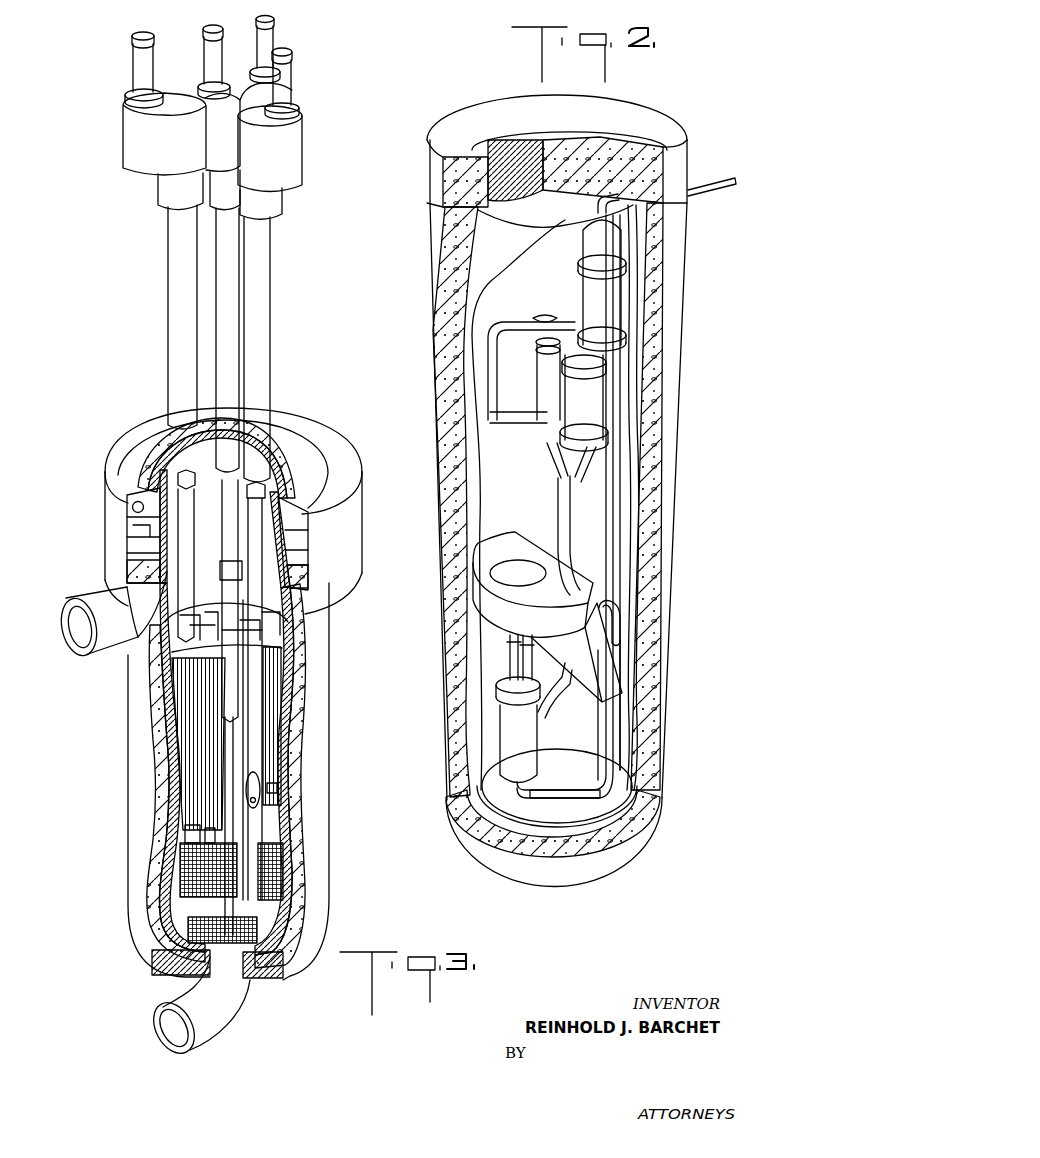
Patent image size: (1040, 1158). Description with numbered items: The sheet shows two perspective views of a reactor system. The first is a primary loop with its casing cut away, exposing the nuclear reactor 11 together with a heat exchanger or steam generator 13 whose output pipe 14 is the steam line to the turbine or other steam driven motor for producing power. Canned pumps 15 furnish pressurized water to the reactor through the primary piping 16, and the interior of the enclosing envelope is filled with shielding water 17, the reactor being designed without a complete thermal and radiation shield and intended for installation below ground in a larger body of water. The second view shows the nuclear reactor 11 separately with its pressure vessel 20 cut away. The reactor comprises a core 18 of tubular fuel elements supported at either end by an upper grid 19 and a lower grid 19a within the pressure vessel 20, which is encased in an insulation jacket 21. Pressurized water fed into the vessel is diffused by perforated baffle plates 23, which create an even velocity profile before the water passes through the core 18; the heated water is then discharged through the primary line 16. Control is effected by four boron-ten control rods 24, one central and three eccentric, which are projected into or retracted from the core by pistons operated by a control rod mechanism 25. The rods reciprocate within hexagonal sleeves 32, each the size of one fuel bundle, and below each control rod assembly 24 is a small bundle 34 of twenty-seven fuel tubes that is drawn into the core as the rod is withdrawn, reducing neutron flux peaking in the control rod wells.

In FIG. 2, the nuclear reactor 11 is at (520, 742).
In FIG. 3, the nuclear reactor 11 is at (110, 823).
In FIG. 2, the heat exchanger or steam generator 13 is at (602, 459).
In FIG. 2, the output pipe 14 is at (703, 193).
In FIG. 2, the canned pumps 15 is at (587, 395).
In FIG. 2, the primary piping 16 is at (563, 483).
In FIG. 3, the primary piping 16 is at (90, 595).
In FIG. 2, the shielding water 17 is at (595, 734).
In FIG. 3, the core 18 is at (272, 688).
In FIG. 2, the upper grid 19 is at (493, 232).
In FIG. 3, the upper grid 19 is at (148, 664).
In FIG. 3, the lower grid 19a is at (190, 823).
In FIG. 3, the pressure vessel 20 is at (302, 732).
In FIG. 3, the insulation jacket 21 is at (300, 757).
In FIG. 3, the baffle plates 23 is at (220, 1013).
In FIG. 3, the control rods 24 is at (292, 478).
In FIG. 3, the control rod mechanism 25 is at (290, 146).
In FIG. 3, the hexagonal sleeves 32 is at (258, 663).
In FIG. 3, the small bundle of fuel tubes 34 is at (262, 802).